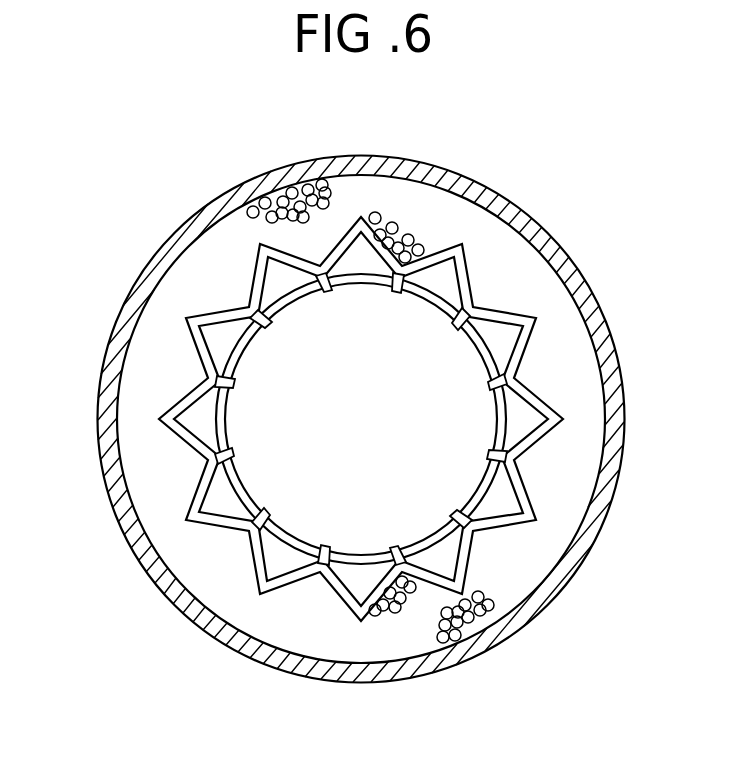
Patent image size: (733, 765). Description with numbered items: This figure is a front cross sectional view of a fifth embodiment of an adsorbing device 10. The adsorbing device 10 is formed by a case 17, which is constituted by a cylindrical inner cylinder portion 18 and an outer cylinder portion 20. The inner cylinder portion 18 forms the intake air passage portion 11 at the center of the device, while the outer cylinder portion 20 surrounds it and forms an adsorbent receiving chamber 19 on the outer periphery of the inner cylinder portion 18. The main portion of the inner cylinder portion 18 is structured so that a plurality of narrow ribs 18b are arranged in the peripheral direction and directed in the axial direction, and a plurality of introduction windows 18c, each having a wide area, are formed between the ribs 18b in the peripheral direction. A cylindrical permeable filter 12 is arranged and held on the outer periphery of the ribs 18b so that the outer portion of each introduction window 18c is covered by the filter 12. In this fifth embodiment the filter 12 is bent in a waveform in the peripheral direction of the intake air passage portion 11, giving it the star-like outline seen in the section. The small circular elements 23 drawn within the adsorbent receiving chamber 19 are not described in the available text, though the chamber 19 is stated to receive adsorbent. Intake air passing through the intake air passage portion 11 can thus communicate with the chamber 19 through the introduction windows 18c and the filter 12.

The adsorbing device 10 is at (190, 167).
The intake air passage portion 11 is at (380, 516).
The permeable filter 12 is at (480, 277).
The case 17 is at (467, 177).
The inner cylinder portion 18 is at (368, 285).
The ribs 18b is at (460, 320).
The introduction windows 18c is at (220, 410).
The adsorbent receiving chamber 19 is at (583, 380).
The outer cylinder portion 20 is at (608, 456).
The particles / pellets 23 is at (250, 212).